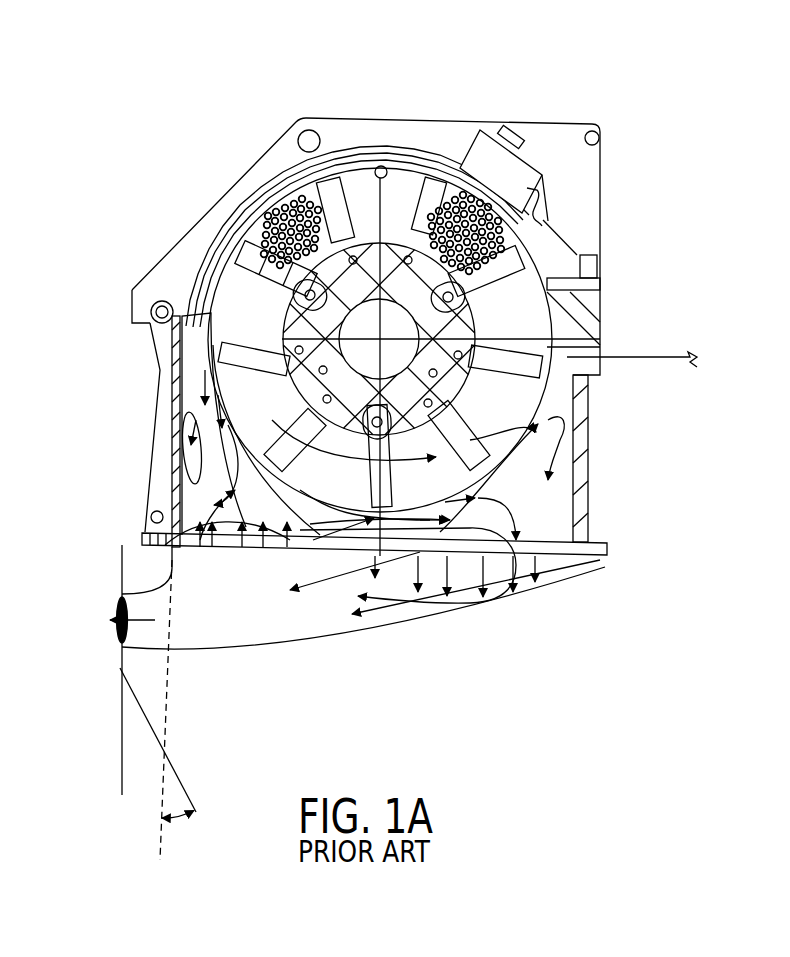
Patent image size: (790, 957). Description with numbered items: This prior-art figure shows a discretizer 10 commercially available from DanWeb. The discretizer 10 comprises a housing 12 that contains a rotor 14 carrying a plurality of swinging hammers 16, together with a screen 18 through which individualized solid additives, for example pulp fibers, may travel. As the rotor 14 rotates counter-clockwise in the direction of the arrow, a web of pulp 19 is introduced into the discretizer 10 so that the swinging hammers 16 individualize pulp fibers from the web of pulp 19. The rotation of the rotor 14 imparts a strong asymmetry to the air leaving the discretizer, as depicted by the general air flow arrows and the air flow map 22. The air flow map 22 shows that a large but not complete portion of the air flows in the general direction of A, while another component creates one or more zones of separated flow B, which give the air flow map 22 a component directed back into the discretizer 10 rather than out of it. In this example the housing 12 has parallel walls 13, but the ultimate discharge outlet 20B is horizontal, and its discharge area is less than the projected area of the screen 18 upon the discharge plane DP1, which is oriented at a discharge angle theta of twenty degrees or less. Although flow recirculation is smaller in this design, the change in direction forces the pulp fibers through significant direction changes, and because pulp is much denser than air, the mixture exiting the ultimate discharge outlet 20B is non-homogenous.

The discretizer 10 is at (586, 86).
The housing 12 is at (395, 128).
The parallel walls 13 is at (172, 422).
The rotor 14 is at (426, 158).
The swinging hammers 16 is at (348, 172).
The screen 18 is at (260, 540).
The web of pulp 19 is at (672, 357).
The air flow map 22 is at (210, 545).
The ultimate discharge outlet 20B is at (116, 630).
The discharge plane DP1 is at (120, 712).
The general direction of air flow A is at (436, 515).
The zones of separated flow B is at (209, 455).